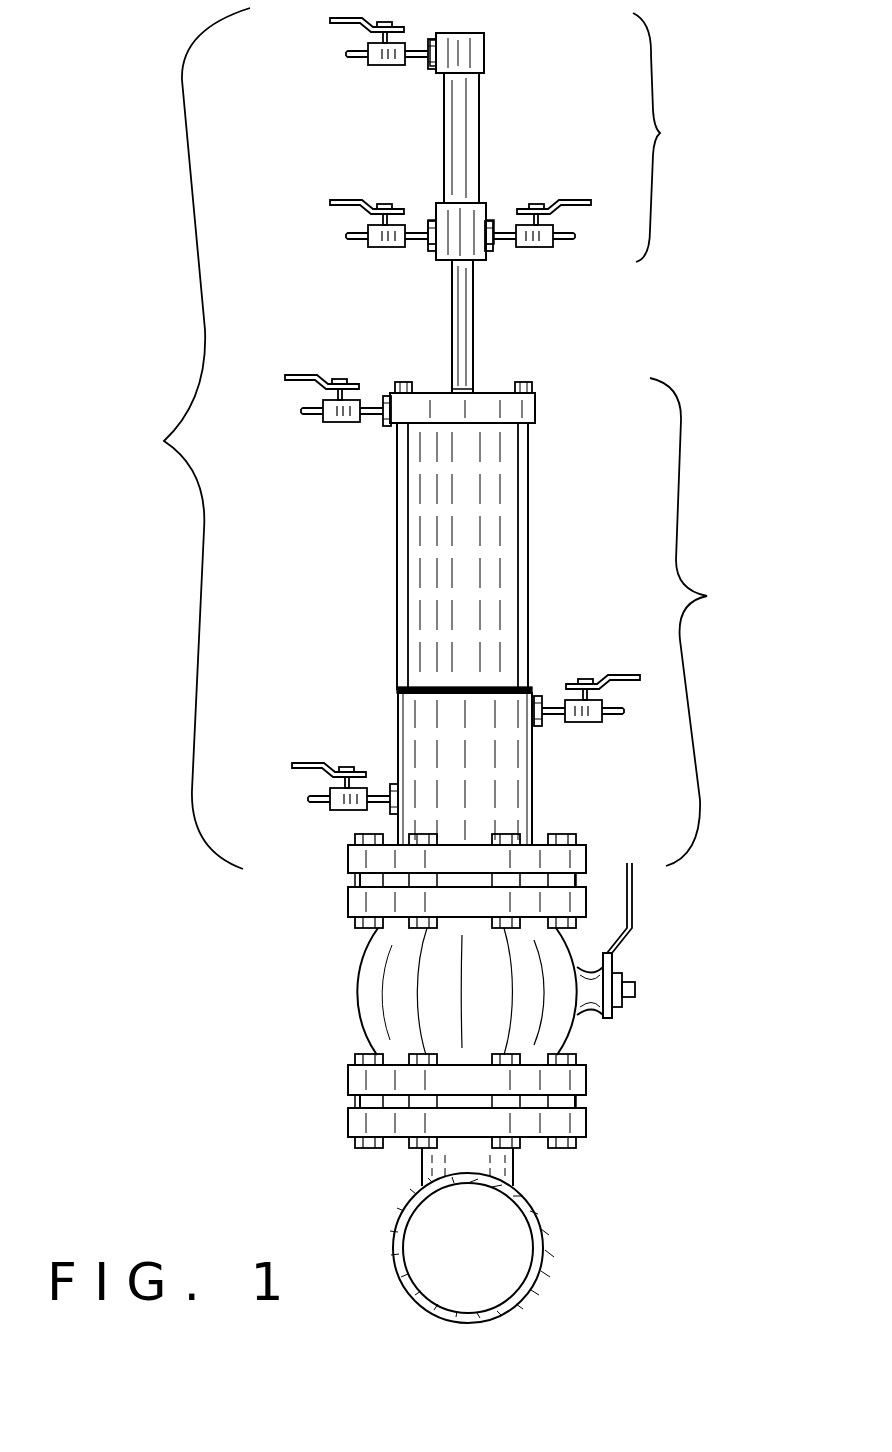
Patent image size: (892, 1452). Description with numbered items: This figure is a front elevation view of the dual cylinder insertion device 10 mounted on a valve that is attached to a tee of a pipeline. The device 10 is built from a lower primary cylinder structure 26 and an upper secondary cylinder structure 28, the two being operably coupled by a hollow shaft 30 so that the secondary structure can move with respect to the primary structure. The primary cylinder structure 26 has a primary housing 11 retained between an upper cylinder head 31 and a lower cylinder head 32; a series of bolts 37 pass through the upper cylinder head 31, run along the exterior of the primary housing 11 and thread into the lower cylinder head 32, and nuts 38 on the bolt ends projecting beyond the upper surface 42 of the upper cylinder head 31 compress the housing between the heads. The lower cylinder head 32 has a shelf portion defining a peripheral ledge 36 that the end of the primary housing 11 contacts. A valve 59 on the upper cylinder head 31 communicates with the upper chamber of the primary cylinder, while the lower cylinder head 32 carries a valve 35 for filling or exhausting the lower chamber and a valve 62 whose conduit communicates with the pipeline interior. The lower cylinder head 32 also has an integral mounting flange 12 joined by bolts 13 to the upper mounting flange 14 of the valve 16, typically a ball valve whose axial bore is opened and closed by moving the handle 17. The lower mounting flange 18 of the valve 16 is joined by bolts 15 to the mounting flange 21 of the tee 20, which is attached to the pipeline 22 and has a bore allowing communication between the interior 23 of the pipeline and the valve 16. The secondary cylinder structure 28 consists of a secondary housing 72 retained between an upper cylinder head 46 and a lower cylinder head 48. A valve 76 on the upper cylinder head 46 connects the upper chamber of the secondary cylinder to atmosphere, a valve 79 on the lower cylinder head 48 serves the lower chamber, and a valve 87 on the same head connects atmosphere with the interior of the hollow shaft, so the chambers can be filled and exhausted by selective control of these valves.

The dual cylinder insertion device 10 is at (182, 438).
The primary housing 11 is at (505, 510).
The mounting flange 12 is at (365, 858).
The bolts 13 is at (365, 880).
The upper mounting flange 14 is at (357, 893).
The bolts 15 is at (365, 1100).
The valve 16 is at (345, 1007).
The handle 17 is at (637, 991).
The lower mounting flange 18 is at (360, 1080).
The tee 20 is at (570, 1162).
The mounting flange 21 is at (365, 1120).
The pipeline 22 is at (548, 1250).
The interior 23 is at (485, 1268).
The primary cylinder structure 26 is at (701, 622).
The secondary cylinder structure 28 is at (665, 137).
The hollow shaft 30 is at (458, 320).
The upper cylinder head 31 is at (537, 412).
The lower cylinder head 32 is at (534, 770).
The valve 35 is at (582, 712).
The peripheral ledge 36 is at (400, 682).
The bolts 37 is at (531, 462).
The nuts 38 is at (525, 385).
The upper surface 42 is at (490, 390).
The upper cylinder head 46 is at (462, 48).
The lower cylinder head 48 is at (468, 217).
The valve 59 is at (348, 415).
The valve 62 is at (350, 800).
The secondary housing 72 is at (457, 132).
The valve 76 is at (385, 57).
The valve 79 is at (385, 242).
The valve 87 is at (538, 243).